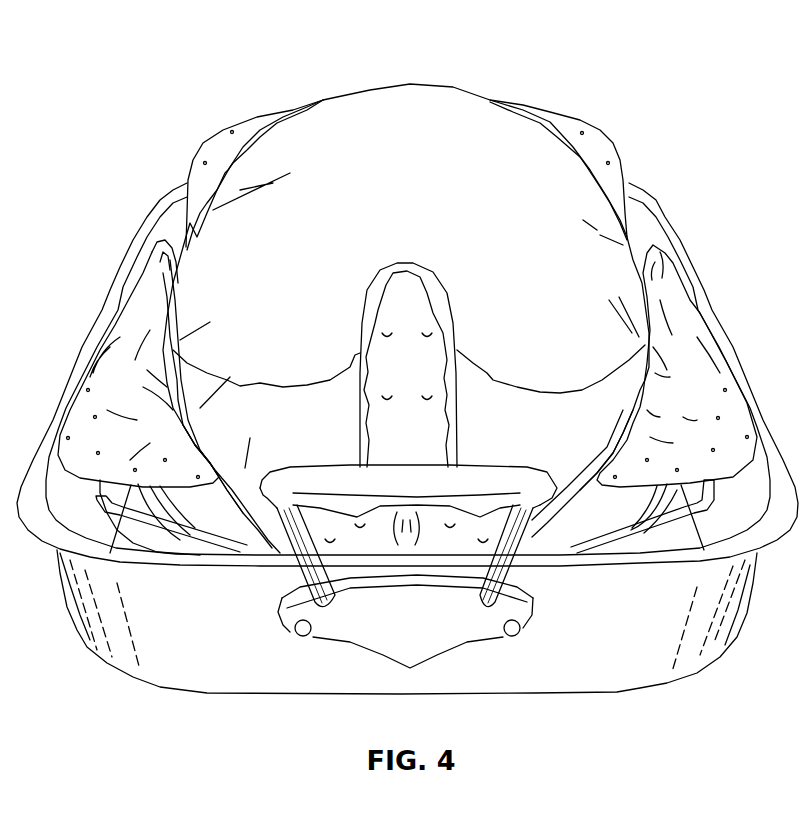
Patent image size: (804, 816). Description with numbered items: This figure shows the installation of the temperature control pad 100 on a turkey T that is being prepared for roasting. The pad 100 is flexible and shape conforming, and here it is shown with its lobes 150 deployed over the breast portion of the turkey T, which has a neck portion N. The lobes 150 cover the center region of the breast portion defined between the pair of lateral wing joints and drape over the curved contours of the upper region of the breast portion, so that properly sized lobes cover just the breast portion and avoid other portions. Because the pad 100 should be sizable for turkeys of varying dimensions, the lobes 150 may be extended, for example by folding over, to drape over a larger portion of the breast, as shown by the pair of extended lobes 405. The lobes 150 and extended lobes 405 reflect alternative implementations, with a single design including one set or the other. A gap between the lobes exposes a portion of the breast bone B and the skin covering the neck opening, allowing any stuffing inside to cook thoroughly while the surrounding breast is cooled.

The temperature control pad 100 is at (384, 200).
The lobes 150 is at (264, 311).
The extended lobes 405 is at (258, 436).
The neck portion N is at (410, 450).
The breast bone B is at (410, 347).
The turkey T is at (675, 330).